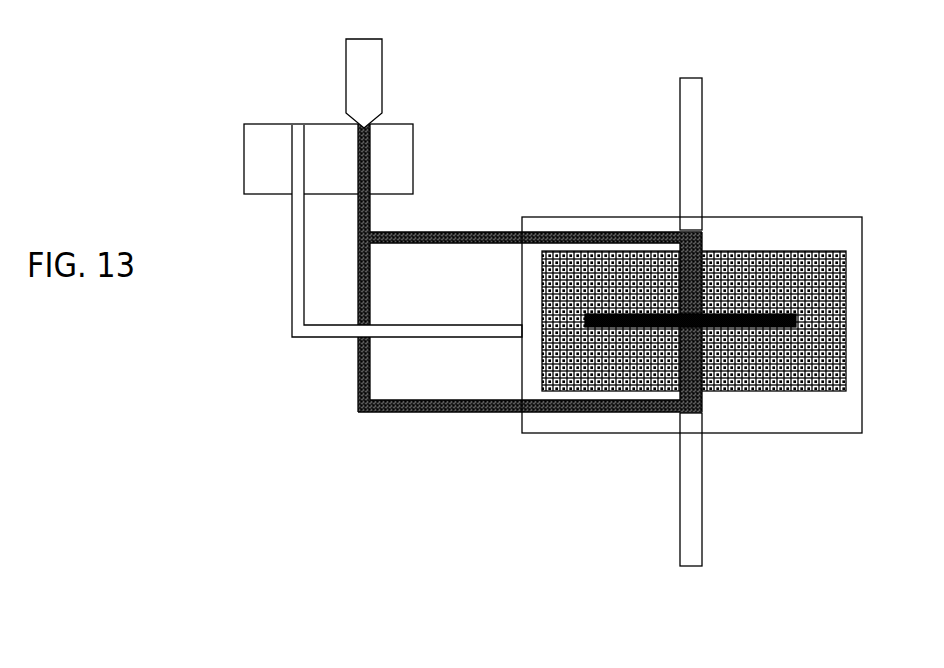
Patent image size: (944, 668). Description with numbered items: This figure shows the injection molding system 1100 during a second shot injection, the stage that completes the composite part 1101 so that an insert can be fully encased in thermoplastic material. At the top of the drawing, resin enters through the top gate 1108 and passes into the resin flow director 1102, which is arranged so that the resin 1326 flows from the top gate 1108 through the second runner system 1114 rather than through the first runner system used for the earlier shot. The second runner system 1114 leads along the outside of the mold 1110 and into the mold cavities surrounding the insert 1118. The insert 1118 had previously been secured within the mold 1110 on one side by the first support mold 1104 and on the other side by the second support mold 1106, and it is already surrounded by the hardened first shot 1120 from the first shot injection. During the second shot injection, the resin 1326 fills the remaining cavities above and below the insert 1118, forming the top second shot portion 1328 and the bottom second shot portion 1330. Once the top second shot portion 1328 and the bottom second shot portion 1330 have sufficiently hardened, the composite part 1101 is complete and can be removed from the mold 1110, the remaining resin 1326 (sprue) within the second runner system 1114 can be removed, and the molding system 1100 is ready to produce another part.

The injection molding system 1100 is at (209, 88).
The composite part 1101 is at (792, 472).
The resin flow director 1102 is at (244, 152).
The first support mold 1104 is at (679, 130).
The second support mold 1106 is at (679, 478).
The top gate 1108 is at (383, 70).
The mold 1110 is at (773, 217).
The second runner system 1114 is at (415, 413).
The insert 1118 is at (733, 314).
The first shot 1120 is at (802, 370).
The resin 1326 is at (455, 232).
The top second shot portion 1328 is at (680, 284).
The bottom second shot portion 1330 is at (680, 360).